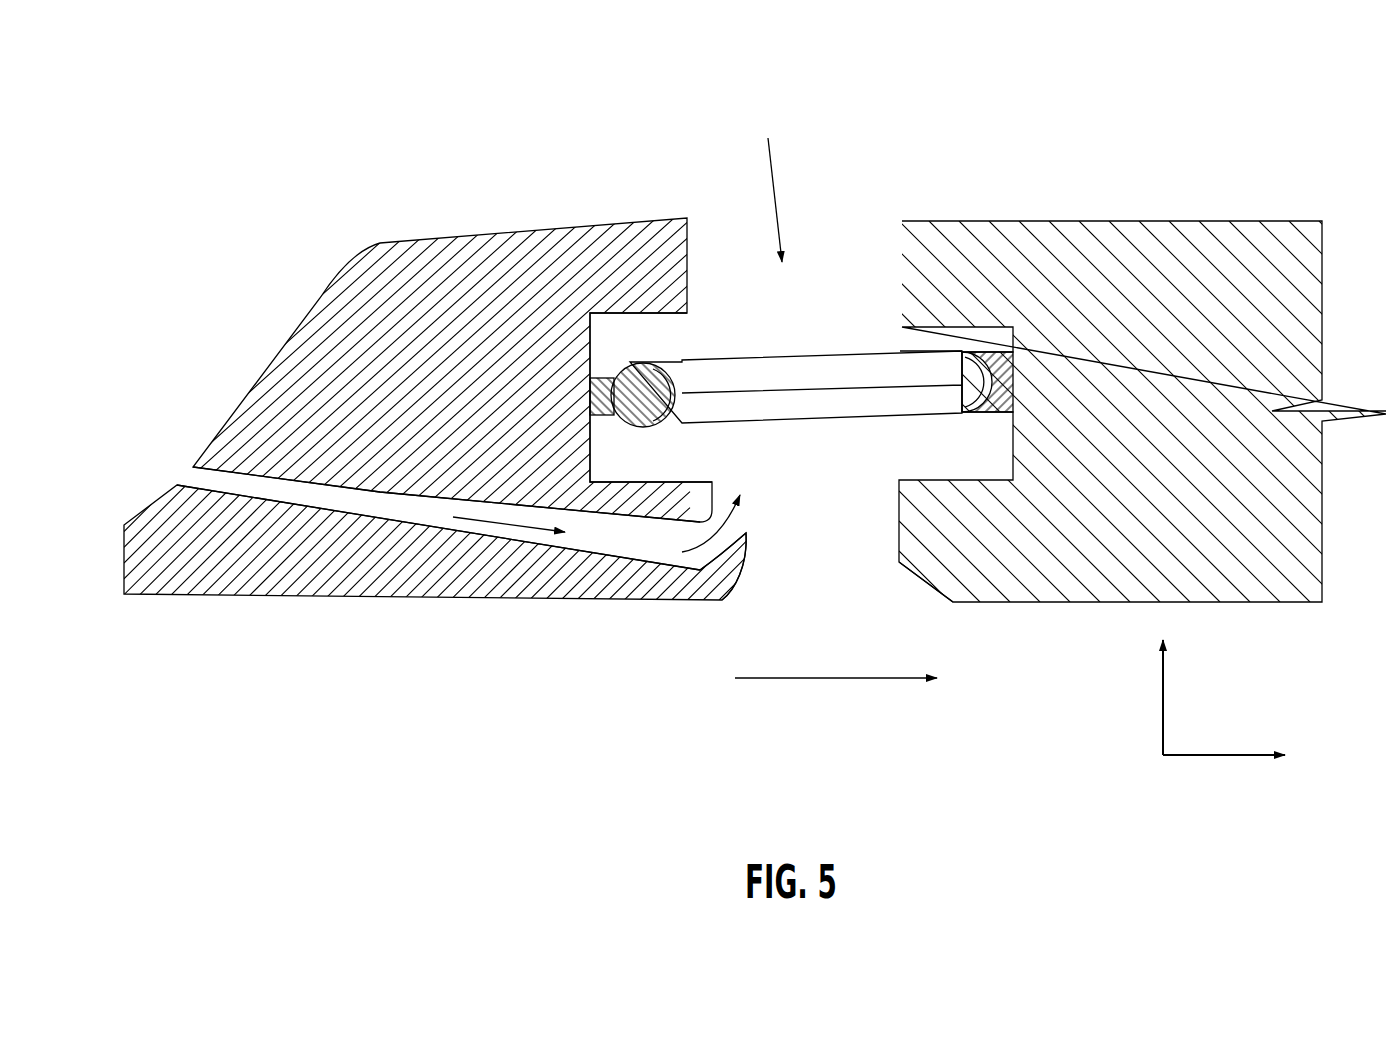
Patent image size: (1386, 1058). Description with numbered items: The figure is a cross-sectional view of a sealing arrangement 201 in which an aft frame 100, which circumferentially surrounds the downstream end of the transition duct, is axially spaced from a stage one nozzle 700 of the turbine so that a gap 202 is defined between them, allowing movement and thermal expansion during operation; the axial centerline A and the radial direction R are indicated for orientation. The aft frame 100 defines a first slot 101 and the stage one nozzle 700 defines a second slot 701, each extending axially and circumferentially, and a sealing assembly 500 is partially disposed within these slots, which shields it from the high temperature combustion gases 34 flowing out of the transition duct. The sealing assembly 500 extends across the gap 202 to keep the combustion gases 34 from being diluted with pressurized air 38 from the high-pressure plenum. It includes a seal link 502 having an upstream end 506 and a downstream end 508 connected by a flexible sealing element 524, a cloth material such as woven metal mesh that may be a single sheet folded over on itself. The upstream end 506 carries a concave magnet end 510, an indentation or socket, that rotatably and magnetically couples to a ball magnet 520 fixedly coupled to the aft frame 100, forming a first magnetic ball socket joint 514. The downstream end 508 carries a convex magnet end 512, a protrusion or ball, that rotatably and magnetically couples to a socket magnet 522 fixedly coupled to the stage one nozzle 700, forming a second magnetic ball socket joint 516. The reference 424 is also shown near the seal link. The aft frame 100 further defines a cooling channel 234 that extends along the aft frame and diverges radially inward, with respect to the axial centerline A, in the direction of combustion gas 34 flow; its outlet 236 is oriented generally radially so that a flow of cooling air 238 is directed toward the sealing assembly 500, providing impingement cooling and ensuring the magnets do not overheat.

The sealing arrangement 201 is at (342, 167).
The aft frame 100 is at (495, 257).
The first slot 101 is at (667, 315).
The first magnetic ball socket joint 514 is at (658, 347).
The cooling channel 234 is at (471, 481).
The flow of cooling air 238 is at (510, 525).
The outlet 236 is at (735, 552).
The ball magnet 520 is at (630, 415).
The upstream end 506 is at (690, 417).
The concave magnet end 510 is at (690, 417).
The sealing assembly 500 is at (796, 286).
The flexible sealing element 524 is at (796, 351).
The seal link 502 is at (803, 370).
The pressurized air 38 is at (782, 185).
The gap 424 is at (910, 367).
The stage one nozzle 700 is at (1109, 368).
The gap 202 is at (1109, 432).
The second slot 701 is at (913, 472).
The downstream end 508 is at (972, 407).
The convex magnet end 512 is at (967, 397).
The second magnetic ball socket joint 516 is at (1046, 271).
The socket magnet 522 is at (1046, 314).
The combustion gases 34 is at (838, 680).
The radial direction R is at (1163, 694).
The axial centerline A is at (1208, 757).